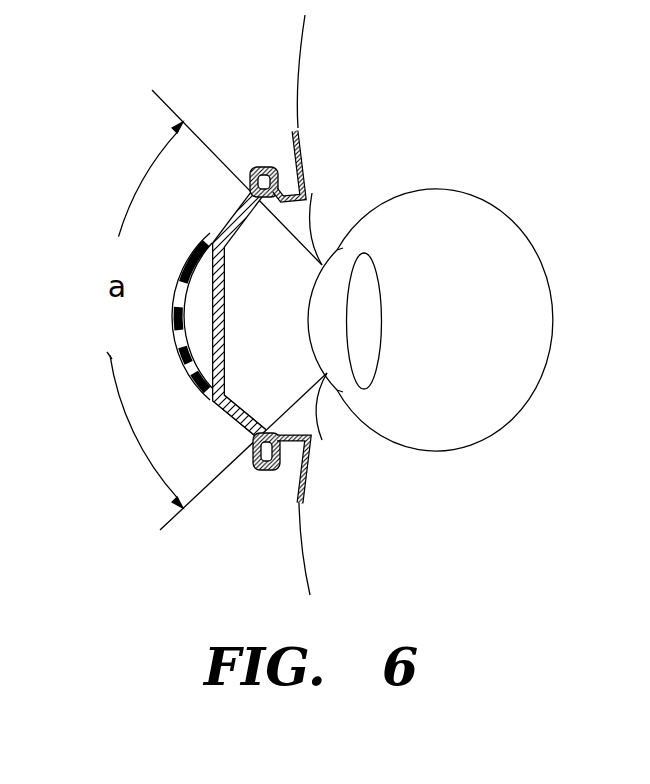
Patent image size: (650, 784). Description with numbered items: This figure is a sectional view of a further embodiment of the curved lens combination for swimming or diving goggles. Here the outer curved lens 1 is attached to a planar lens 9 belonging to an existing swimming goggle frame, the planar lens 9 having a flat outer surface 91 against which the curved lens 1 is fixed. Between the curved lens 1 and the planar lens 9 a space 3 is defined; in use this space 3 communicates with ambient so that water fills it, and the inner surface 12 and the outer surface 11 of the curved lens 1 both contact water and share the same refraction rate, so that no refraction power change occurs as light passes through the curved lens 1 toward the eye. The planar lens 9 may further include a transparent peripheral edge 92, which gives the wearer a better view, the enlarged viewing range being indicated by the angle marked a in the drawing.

The curved lens 1 is at (187, 367).
The space 3 is at (204, 290).
The planar lens 9 is at (222, 268).
The outer surface 11 is at (175, 343).
The inner surface 12 is at (214, 354).
The flat outer surface 91 is at (173, 313).
The transparent peripheral edge 92 is at (238, 425).